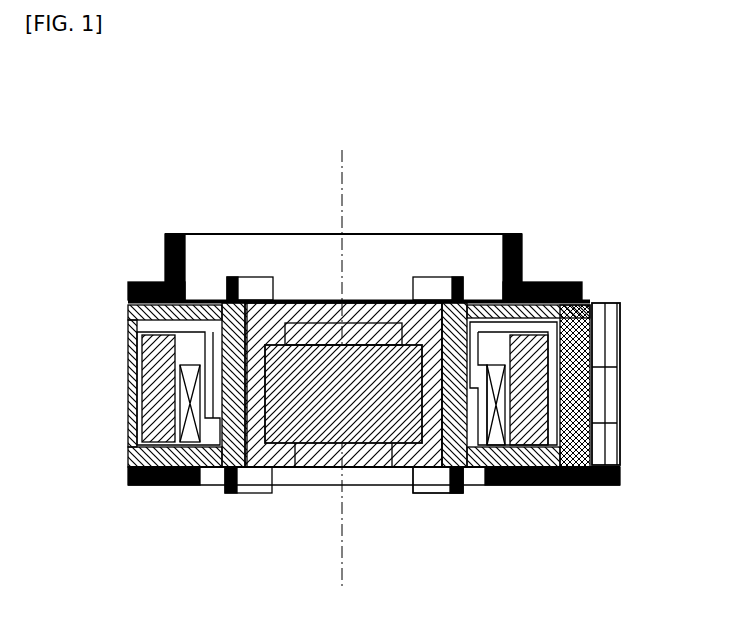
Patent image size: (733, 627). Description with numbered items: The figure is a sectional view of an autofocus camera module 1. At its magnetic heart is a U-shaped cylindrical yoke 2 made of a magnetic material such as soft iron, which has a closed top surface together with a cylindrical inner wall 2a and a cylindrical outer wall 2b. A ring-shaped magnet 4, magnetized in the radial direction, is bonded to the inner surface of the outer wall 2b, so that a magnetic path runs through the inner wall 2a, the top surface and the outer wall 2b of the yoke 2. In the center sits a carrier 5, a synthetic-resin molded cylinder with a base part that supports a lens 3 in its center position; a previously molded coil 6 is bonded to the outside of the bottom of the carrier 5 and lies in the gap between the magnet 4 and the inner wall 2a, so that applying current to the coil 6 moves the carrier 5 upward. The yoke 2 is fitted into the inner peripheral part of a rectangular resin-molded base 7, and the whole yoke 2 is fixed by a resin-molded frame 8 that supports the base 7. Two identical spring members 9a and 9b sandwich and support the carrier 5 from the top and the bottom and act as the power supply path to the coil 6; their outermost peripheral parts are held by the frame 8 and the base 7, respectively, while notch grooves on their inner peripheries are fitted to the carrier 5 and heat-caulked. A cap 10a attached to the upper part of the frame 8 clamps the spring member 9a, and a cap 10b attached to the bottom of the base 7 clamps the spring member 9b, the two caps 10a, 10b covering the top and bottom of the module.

The autofocus camera module 1 is at (466, 233).
The yoke 2 is at (600, 366).
The inner wall 2a is at (157, 281).
The outer wall 2b is at (130, 374).
The lens 3 is at (392, 486).
The magnet 4 is at (556, 284).
The carrier 5 is at (455, 490).
The coil 6 is at (497, 486).
The base 7 is at (593, 441).
The frame 8 is at (613, 317).
The spring member 9a is at (208, 299).
The spring member 9b is at (205, 470).
The cap 10a is at (522, 243).
The cap 10b is at (578, 486).